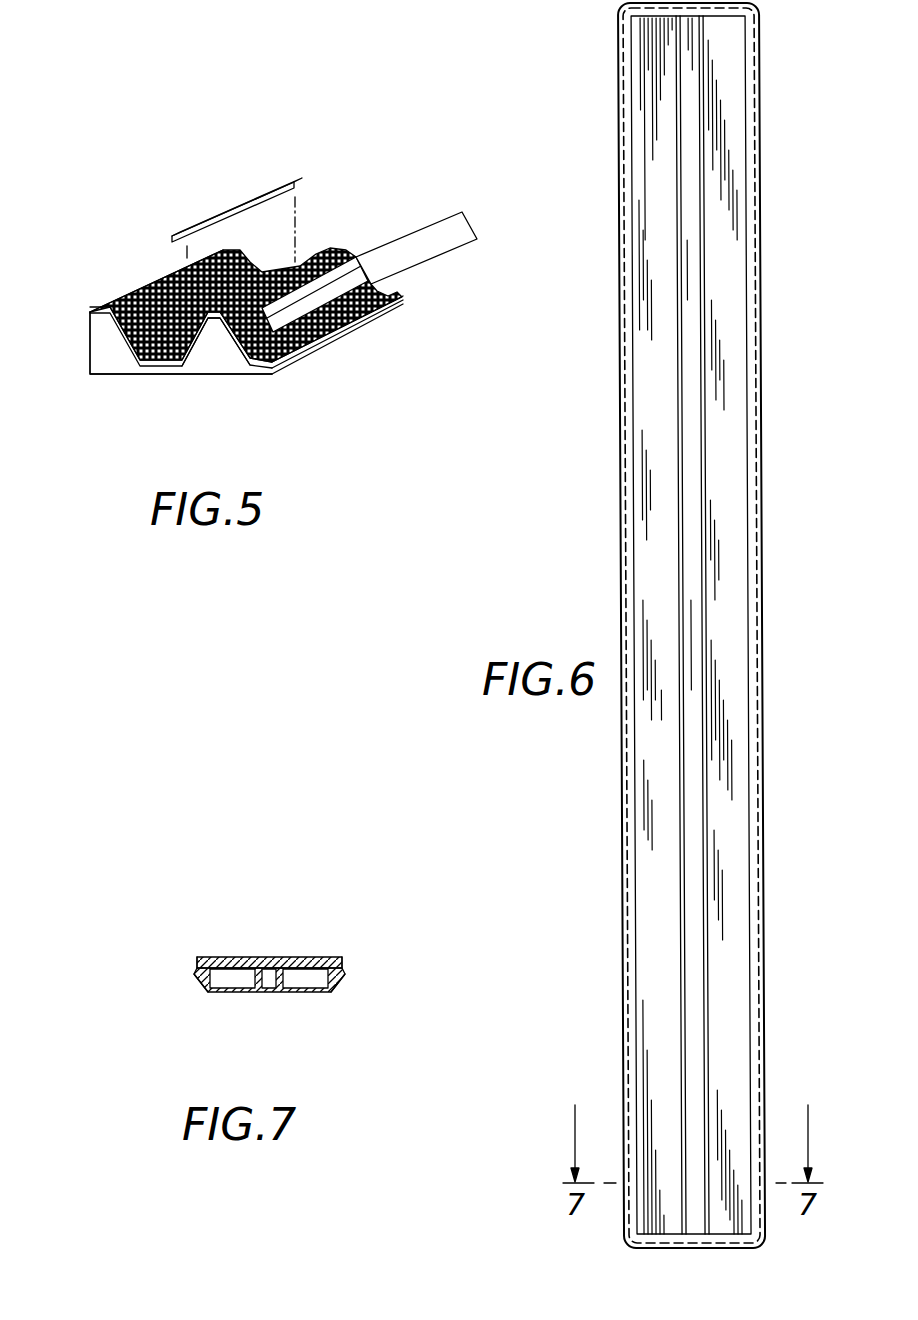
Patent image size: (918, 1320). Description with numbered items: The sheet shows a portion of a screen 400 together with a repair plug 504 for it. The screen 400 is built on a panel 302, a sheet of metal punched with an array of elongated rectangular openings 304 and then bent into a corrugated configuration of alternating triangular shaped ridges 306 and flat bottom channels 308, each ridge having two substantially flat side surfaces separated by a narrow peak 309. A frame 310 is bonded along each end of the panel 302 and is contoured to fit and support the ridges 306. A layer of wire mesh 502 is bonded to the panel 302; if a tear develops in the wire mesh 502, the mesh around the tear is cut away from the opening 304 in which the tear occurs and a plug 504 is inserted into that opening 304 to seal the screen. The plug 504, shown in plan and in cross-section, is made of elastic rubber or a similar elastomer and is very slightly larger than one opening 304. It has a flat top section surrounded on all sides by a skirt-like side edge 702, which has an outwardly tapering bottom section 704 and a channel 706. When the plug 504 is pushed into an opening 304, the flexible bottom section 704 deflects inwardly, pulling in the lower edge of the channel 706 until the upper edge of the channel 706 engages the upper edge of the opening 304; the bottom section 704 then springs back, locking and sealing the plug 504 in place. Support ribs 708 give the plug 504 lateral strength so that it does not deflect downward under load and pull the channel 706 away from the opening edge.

In FIG. 5, the panel 302 is at (104, 318).
In FIG. 5, the openings 304 is at (314, 308).
In FIG. 5, the triangular shaped ridges 306 is at (198, 380).
In FIG. 5, the flat bottom channels 308 is at (305, 258).
In FIG. 5, the narrow peak 309 is at (172, 278).
In FIG. 5, the frame 310 is at (219, 355).
In FIG. 5, the screen 400 is at (252, 190).
In FIG. 5, the layer of wire mesh 502 is at (122, 300).
In FIG. 5, the plug 504 is at (226, 212).
In FIG. 6, the plug 504 is at (606, 560).
In FIG. 7, the plug 504 is at (268, 945).
In FIG. 6, the side edge 702 is at (755, 670).
In FIG. 7, the side edge 702 is at (230, 990).
In FIG. 7, the tapering bottom section 704 is at (197, 975).
In FIG. 7, the channel 706 is at (197, 970).
In FIG. 6, the support ribs 708 is at (700, 900).
In FIG. 7, the support ribs 708 is at (278, 992).